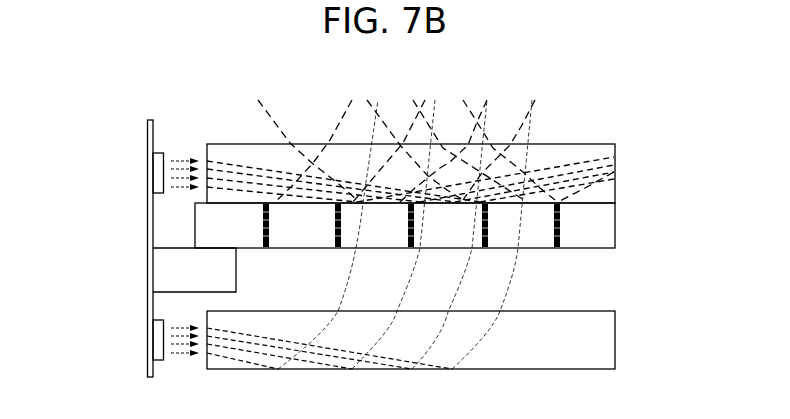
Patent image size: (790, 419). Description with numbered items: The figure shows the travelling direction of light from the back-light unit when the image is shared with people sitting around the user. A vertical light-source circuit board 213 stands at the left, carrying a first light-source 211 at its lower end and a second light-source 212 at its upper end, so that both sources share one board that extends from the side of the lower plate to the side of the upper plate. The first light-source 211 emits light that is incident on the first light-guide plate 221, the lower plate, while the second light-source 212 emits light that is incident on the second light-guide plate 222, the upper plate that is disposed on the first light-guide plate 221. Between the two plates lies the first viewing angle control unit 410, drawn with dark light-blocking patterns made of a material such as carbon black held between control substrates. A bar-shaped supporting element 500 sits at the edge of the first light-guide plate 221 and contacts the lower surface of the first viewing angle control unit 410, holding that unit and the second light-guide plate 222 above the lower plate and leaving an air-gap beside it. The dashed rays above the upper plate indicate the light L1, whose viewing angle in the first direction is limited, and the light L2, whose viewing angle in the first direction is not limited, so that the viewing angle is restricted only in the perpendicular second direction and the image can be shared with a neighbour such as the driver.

The first light-source 211 is at (153, 330).
The second light-source 212 is at (153, 172).
The light-source circuit board 213 is at (150, 237).
The first light-guide plate 221 is at (602, 350).
The second light-guide plate 222 is at (602, 193).
The first viewing angle control unit 410 is at (636, 222).
The supporting element 500 is at (165, 275).
The light whose viewing angle in the first direction is limited L1 is at (376, 110).
The light whose viewing angle in the first direction is not limited L2 is at (530, 112).